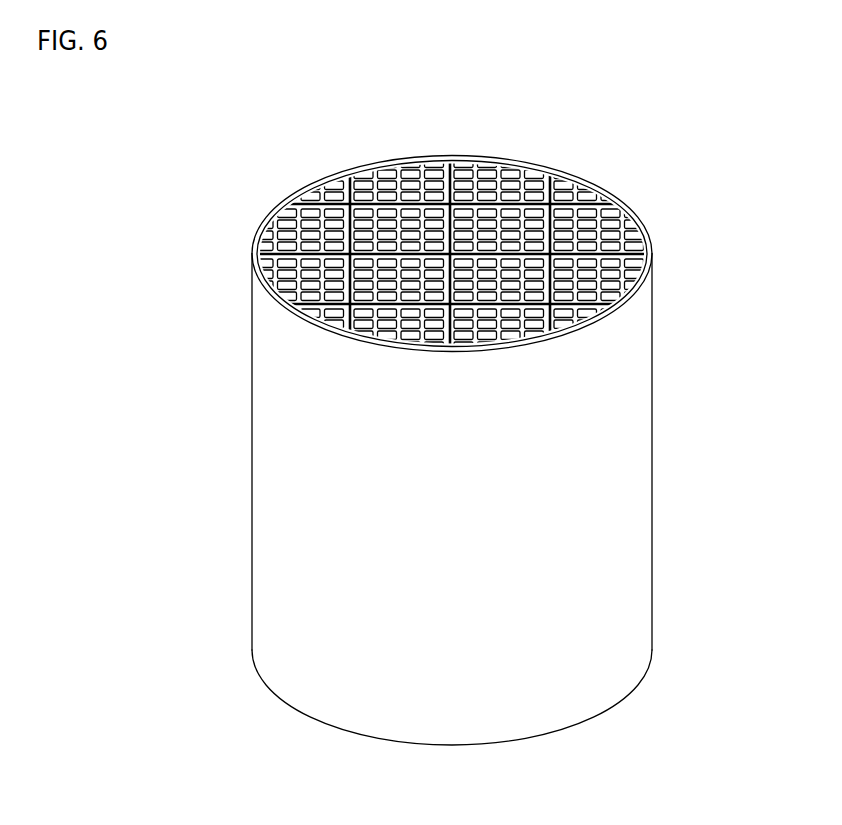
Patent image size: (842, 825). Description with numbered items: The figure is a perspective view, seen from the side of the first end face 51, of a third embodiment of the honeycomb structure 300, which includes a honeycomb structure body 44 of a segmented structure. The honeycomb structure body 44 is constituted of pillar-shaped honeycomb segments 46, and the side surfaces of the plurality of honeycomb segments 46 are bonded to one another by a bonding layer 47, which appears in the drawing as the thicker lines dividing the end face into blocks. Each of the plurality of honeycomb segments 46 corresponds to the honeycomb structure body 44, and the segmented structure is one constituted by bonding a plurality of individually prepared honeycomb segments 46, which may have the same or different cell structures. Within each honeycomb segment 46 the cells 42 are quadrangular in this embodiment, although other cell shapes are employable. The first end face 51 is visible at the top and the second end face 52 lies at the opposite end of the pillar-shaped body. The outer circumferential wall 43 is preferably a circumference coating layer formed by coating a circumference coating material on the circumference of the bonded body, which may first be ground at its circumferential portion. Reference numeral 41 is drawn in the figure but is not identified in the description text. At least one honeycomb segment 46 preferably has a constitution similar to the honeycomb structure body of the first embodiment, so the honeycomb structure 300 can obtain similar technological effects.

The honeycomb structure 300 is at (785, 76).
The first end face 51 is at (298, 182).
The second end face 52 is at (290, 710).
The bonding layer 47 is at (370, 205).
The honeycomb segment 46 is at (422, 228).
The cell 41 is at (528, 217).
The cell 42 is at (540, 233).
The circumferential wall 43 is at (603, 373).
The honeycomb structure body 44 is at (633, 262).